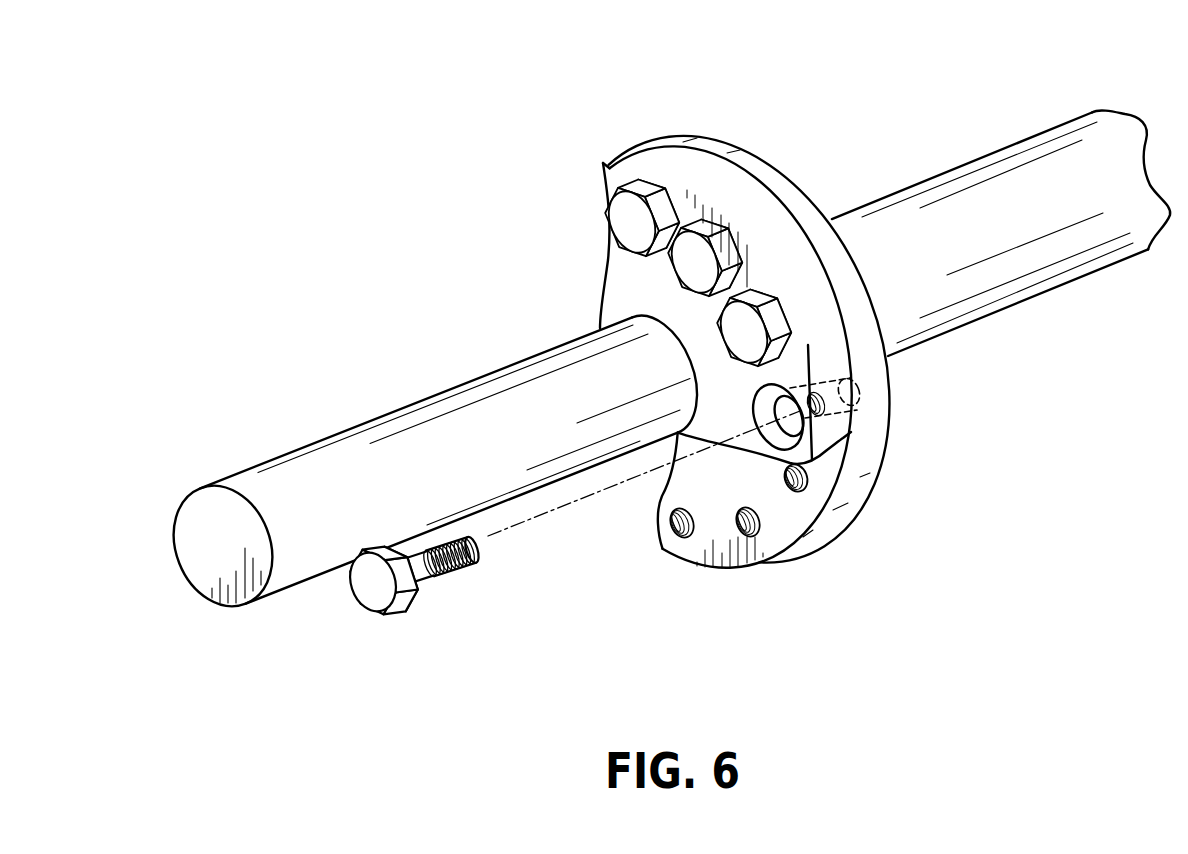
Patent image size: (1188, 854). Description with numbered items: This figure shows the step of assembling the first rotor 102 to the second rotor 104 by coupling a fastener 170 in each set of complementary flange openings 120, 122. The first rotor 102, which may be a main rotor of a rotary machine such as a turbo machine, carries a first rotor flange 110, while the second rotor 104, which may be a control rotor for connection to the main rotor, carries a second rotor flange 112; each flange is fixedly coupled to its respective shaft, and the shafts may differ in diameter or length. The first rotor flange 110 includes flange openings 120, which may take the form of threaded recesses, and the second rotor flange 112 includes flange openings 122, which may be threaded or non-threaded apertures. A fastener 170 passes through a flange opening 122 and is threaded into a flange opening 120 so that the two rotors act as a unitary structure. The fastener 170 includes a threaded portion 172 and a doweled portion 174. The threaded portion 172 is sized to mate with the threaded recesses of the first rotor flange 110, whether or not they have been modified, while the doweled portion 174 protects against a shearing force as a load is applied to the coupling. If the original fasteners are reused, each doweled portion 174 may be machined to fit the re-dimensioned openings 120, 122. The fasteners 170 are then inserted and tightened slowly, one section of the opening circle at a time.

The first rotor 102 is at (848, 158).
The second rotor 104 is at (467, 343).
The first rotor flange 110 is at (748, 167).
The second rotor flange 112 is at (662, 162).
The flange openings 120 is at (823, 420).
The flange openings 122 is at (772, 450).
The fastener 170 is at (372, 634).
The threaded portion 172 is at (460, 553).
The doweled portion 174 is at (422, 573).